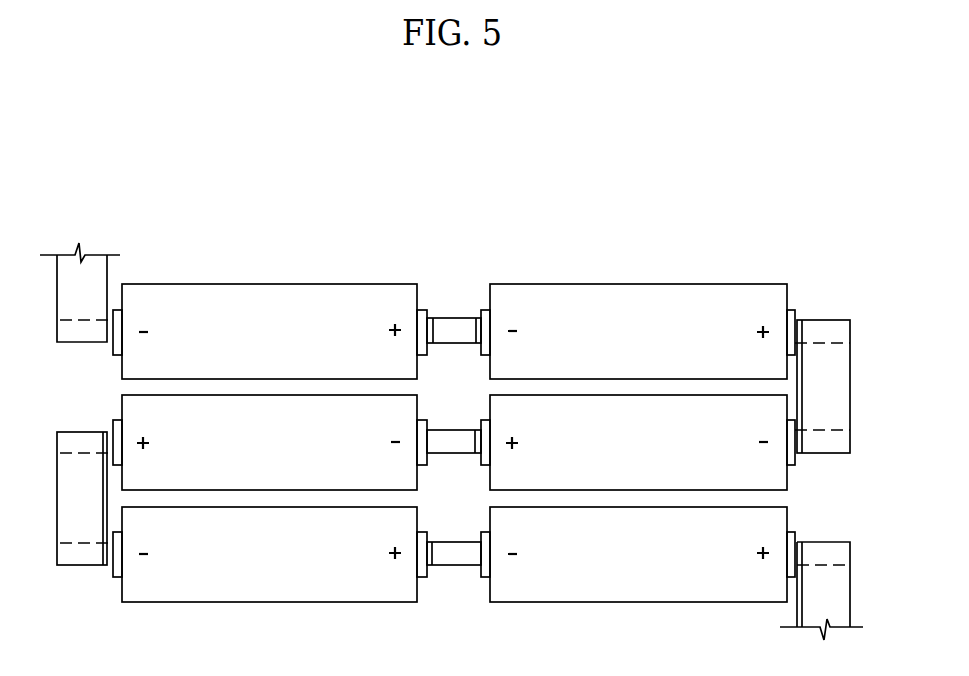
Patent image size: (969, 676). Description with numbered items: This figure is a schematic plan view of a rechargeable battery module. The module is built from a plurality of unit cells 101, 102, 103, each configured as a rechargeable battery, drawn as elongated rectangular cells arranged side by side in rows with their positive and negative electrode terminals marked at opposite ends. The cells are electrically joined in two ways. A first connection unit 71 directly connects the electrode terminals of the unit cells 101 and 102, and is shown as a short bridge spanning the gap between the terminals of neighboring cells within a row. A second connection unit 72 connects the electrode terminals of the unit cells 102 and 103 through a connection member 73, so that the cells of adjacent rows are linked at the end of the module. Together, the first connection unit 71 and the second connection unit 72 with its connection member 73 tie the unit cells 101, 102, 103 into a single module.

The unit cell 101 is at (333, 274).
The unit cell 102 is at (698, 276).
The unit cell 103 is at (631, 390).
The first connection unit 71 is at (455, 300).
The second connection unit 72 is at (820, 306).
The connection member 73 is at (826, 418).